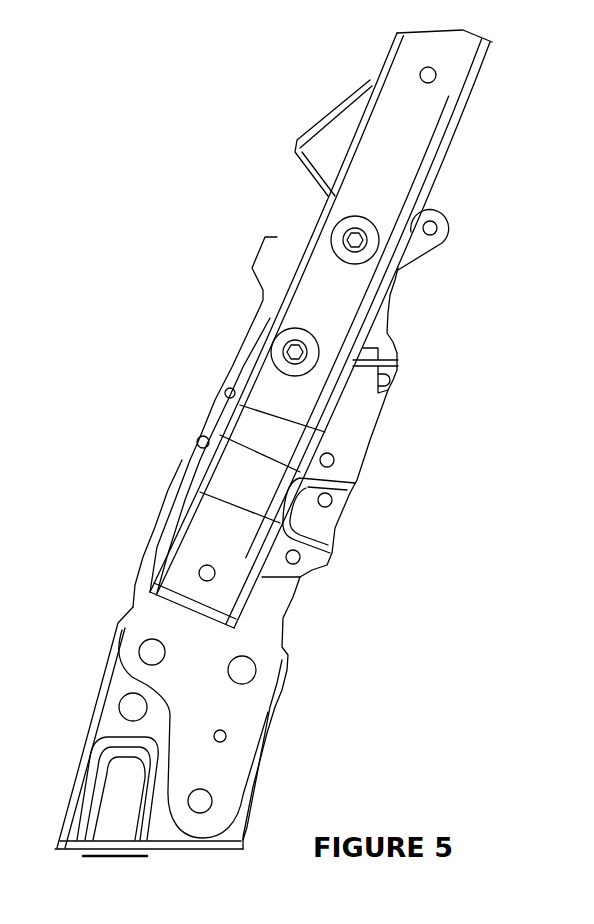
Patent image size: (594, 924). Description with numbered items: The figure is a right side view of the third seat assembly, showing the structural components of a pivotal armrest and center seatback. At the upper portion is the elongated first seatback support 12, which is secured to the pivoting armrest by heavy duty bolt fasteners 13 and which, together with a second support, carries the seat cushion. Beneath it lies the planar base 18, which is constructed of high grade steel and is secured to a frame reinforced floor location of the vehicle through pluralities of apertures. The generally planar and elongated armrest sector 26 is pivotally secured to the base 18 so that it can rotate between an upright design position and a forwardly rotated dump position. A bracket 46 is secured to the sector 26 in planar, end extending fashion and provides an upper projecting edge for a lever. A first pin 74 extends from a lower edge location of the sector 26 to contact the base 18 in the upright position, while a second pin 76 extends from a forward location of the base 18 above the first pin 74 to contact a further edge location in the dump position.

The first seatback support 12 is at (383, 66).
The heavy duty bolt fasteners 13 is at (278, 347).
The bracket 46 is at (449, 218).
The armrest sector 26 is at (394, 295).
The second pin 76 is at (197, 442).
The first pin 74 is at (300, 558).
The base 18 is at (268, 717).